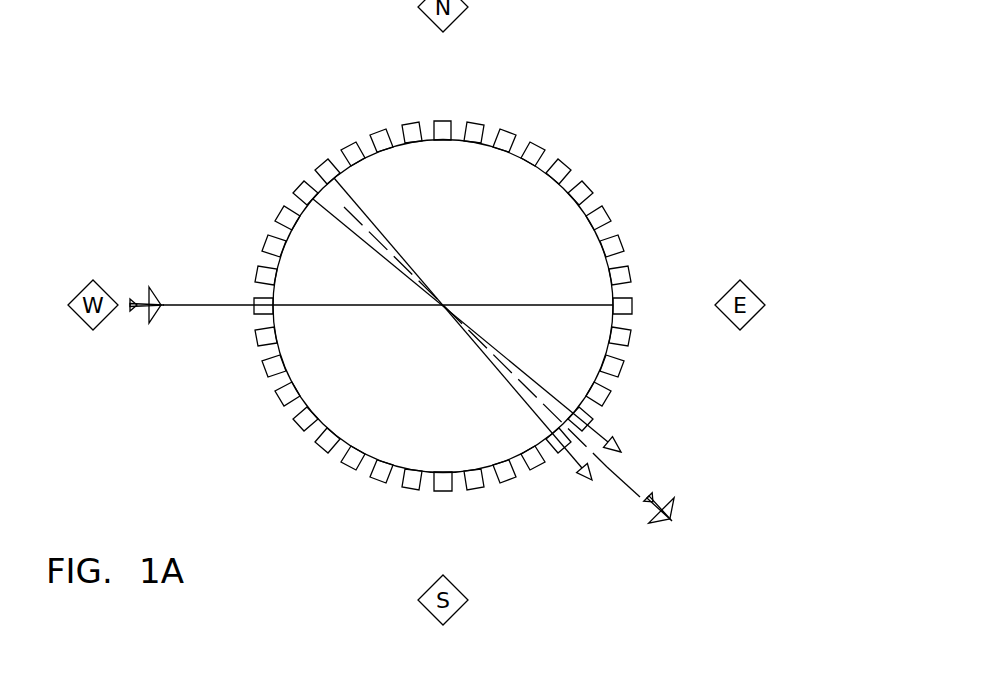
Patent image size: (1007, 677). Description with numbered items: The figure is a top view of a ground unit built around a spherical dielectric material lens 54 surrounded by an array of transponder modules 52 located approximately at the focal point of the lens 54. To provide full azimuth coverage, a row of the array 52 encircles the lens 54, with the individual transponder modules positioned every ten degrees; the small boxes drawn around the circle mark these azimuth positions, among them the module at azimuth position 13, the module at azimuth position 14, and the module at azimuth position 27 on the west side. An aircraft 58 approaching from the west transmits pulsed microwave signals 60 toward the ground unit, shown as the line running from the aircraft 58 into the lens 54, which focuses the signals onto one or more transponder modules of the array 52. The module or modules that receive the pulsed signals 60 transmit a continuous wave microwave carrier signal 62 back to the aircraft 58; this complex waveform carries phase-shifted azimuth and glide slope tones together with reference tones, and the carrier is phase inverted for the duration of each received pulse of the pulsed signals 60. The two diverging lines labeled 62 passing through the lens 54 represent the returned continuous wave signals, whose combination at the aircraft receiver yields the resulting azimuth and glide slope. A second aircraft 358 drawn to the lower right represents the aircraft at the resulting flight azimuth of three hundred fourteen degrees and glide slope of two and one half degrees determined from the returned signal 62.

The transponder module azimuth position 13 is at (590, 423).
The transponder module azimuth position 14 is at (566, 444).
The transponder module azimuth position 27 is at (254, 313).
The array of transponder modules 52 is at (463, 341).
The dielectric material lens 54 is at (424, 203).
The aircraft 58 is at (136, 302).
The pulsed microwave signals 60 is at (330, 306).
The continuous wave microwave carrier signal 62 is at (375, 248).
The aircraft 358 is at (668, 503).